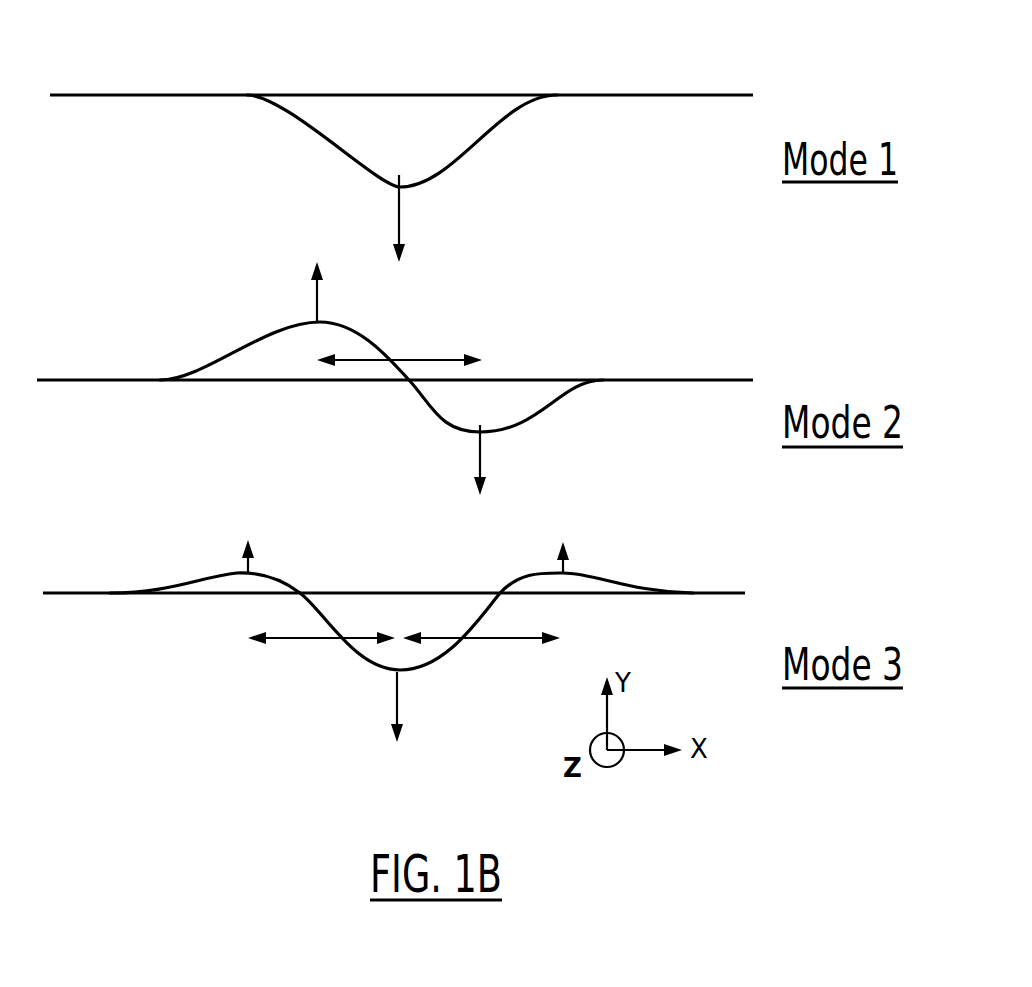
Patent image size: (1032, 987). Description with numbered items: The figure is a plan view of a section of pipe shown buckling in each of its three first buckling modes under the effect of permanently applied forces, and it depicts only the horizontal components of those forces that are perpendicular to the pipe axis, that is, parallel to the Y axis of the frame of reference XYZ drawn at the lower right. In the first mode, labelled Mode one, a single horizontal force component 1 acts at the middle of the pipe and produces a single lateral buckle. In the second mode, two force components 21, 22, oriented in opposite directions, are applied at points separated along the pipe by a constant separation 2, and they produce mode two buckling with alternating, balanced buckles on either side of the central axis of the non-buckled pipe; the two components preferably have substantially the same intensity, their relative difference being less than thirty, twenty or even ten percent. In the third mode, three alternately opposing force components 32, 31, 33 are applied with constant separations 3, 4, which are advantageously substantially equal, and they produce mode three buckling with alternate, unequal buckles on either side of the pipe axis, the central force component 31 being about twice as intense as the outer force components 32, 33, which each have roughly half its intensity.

The horizontal force component F1Y 1 is at (428, 218).
The force component F21Y 21 is at (352, 292).
The force component F22Y 22 is at (518, 462).
The force component F31Y 31 is at (433, 707).
The force component F32Y 32 is at (218, 546).
The force component F33Y 33 is at (597, 547).
The separation L2 2 is at (399, 345).
The separation L3 3 is at (321, 655).
The separation L4 4 is at (481, 655).